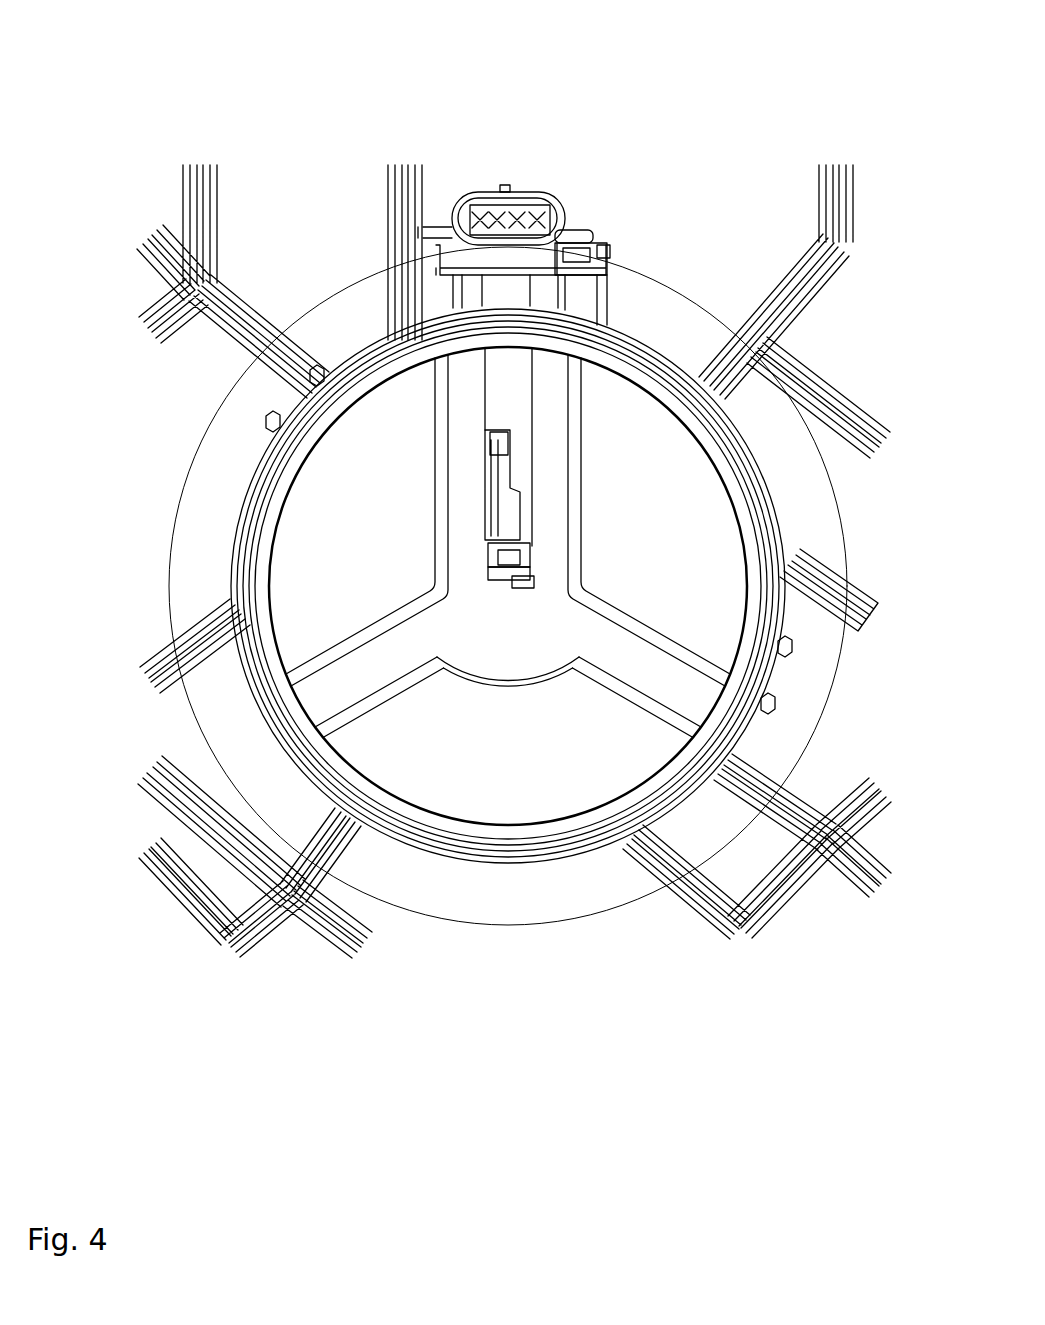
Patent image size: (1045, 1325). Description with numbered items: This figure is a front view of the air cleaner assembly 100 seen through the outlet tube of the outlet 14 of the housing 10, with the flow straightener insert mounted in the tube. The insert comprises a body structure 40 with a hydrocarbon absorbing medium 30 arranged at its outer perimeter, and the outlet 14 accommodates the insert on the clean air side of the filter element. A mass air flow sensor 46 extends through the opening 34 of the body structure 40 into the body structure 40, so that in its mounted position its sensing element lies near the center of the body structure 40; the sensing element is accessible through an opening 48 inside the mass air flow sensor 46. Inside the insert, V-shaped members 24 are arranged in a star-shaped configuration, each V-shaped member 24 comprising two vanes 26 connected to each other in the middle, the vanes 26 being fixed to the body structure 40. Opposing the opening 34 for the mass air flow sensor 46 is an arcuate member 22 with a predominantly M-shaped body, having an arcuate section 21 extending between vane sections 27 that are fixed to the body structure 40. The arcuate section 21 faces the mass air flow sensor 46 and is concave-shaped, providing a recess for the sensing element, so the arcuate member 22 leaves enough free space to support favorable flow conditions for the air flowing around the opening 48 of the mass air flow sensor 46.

The air cleaner assembly 100 is at (757, 100).
The housing 10 is at (830, 292).
The outlet 14 is at (800, 523).
The hydrocarbon absorbing medium 30 is at (350, 350).
The body structure 40 is at (262, 525).
The mass air flow sensor 46 is at (548, 192).
The opening 34 is at (565, 312).
The vanes 26 is at (435, 460).
The V-shaped members 24 is at (440, 548).
The opening 48 is at (528, 562).
The vane sections 27 is at (378, 705).
The arcuate member 22 is at (480, 692).
The arcuate section 21 is at (540, 686).